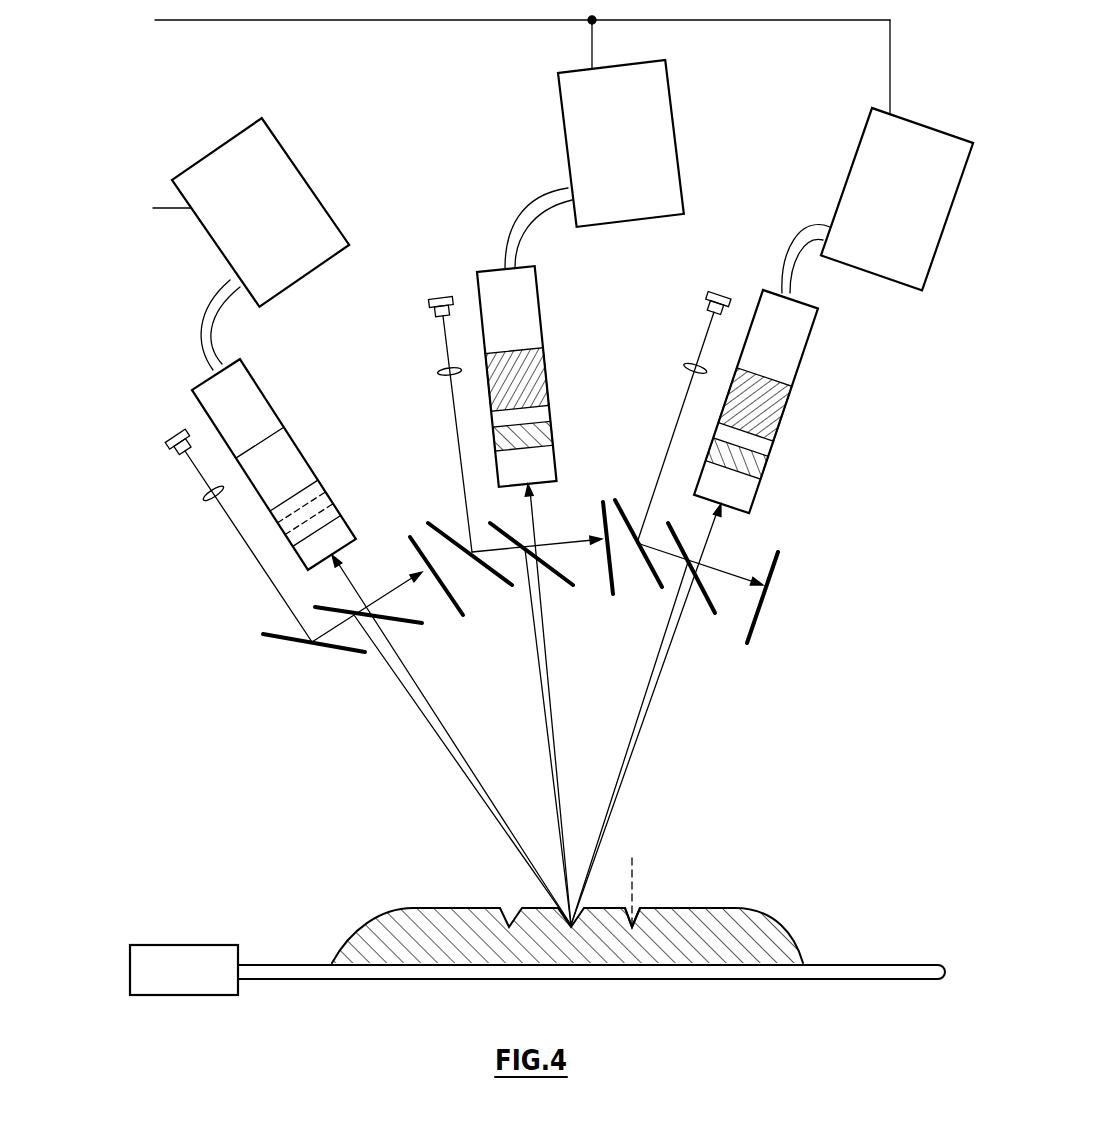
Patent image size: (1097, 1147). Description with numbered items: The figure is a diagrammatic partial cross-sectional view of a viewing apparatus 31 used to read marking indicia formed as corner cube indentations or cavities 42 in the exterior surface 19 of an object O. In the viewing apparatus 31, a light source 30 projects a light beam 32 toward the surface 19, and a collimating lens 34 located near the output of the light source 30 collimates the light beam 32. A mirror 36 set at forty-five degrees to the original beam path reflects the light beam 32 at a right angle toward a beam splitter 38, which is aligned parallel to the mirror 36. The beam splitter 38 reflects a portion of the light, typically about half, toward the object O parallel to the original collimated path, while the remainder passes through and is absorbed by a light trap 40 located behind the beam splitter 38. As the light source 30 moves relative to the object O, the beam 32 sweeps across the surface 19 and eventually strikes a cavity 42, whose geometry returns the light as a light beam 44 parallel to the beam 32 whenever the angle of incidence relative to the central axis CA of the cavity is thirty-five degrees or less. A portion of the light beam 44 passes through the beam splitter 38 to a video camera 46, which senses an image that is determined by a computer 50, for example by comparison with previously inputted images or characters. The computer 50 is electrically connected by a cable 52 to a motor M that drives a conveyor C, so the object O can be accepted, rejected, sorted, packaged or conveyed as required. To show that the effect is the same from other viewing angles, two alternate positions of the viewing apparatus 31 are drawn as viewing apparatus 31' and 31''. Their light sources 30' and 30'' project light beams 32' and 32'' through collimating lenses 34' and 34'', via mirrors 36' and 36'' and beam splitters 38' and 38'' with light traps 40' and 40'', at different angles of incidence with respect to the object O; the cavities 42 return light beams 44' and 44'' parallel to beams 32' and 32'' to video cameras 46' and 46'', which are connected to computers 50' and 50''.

The exterior surface 19 is at (735, 910).
The light source 30 is at (166, 411).
The light source 30' is at (418, 289).
The light source 30'' is at (698, 284).
The viewing apparatus 31 is at (190, 585).
The viewing apparatus 31' is at (425, 231).
The viewing apparatus 31'' is at (852, 410).
The light beam 32 is at (462, 770).
The light beam 32' is at (529, 737).
The light beam 32'' is at (627, 743).
The collimating lens 34 is at (188, 513).
The collimating lens 34' is at (421, 359).
The collimating lens 34'' is at (664, 379).
The mirror 36 is at (289, 657).
The mirror 36' is at (456, 529).
The mirror 36'' is at (638, 515).
The beam splitter 38 is at (393, 636).
The beam splitter 38' is at (549, 577).
The beam splitter 38'' is at (701, 593).
The light trap 40 is at (387, 589).
The light trap 40' is at (542, 546).
The light trap 40'' is at (740, 593).
The corner cube indentation or cavity 42 is at (640, 915).
The light beam 44 is at (453, 742).
The light beam 44' is at (573, 707).
The light beam 44'' is at (648, 718).
The video camera 46 is at (274, 464).
The video camera 46' is at (549, 381).
The video camera 46'' is at (798, 403).
The computer 50 is at (261, 244).
The computer 50' is at (622, 161).
The computer 50'' is at (877, 189).
The cable 52 is at (195, 788).
The object O is at (375, 932).
The motor M is at (165, 945).
The conveyor C is at (900, 965).
The central axis CA is at (635, 865).